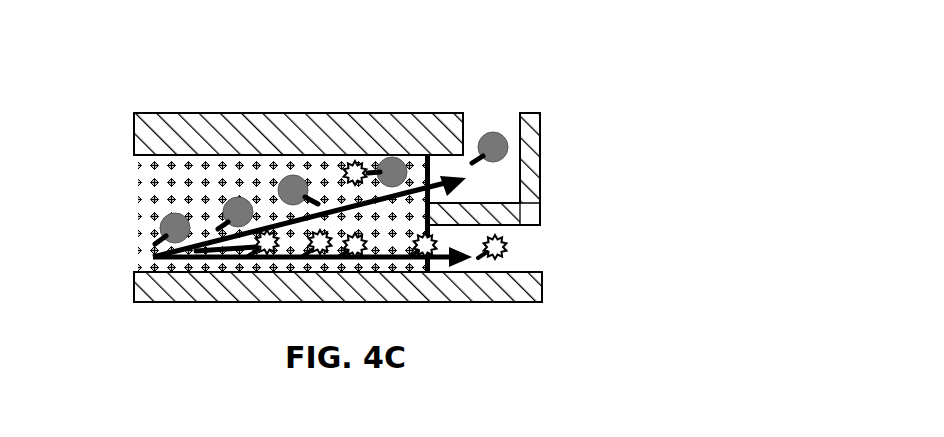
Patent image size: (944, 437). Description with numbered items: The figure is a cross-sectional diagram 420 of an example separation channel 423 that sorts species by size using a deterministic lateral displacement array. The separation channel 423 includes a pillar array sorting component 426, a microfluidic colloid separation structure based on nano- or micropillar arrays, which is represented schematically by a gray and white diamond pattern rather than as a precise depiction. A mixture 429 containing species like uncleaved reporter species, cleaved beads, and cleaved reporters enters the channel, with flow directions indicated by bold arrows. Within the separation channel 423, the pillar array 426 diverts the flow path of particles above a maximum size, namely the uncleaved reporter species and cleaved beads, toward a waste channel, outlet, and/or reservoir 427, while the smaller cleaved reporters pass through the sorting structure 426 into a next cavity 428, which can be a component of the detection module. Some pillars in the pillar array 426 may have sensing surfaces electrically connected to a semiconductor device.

The cross-sectional diagram 420 is at (335, 156).
The separation channel 423 is at (363, 113).
The pillar array sorting component 426 is at (130, 186).
The waste channel, outlet, and/or reservoir 427 is at (464, 127).
The next cavity 428 is at (541, 223).
The mixture 429 is at (132, 237).